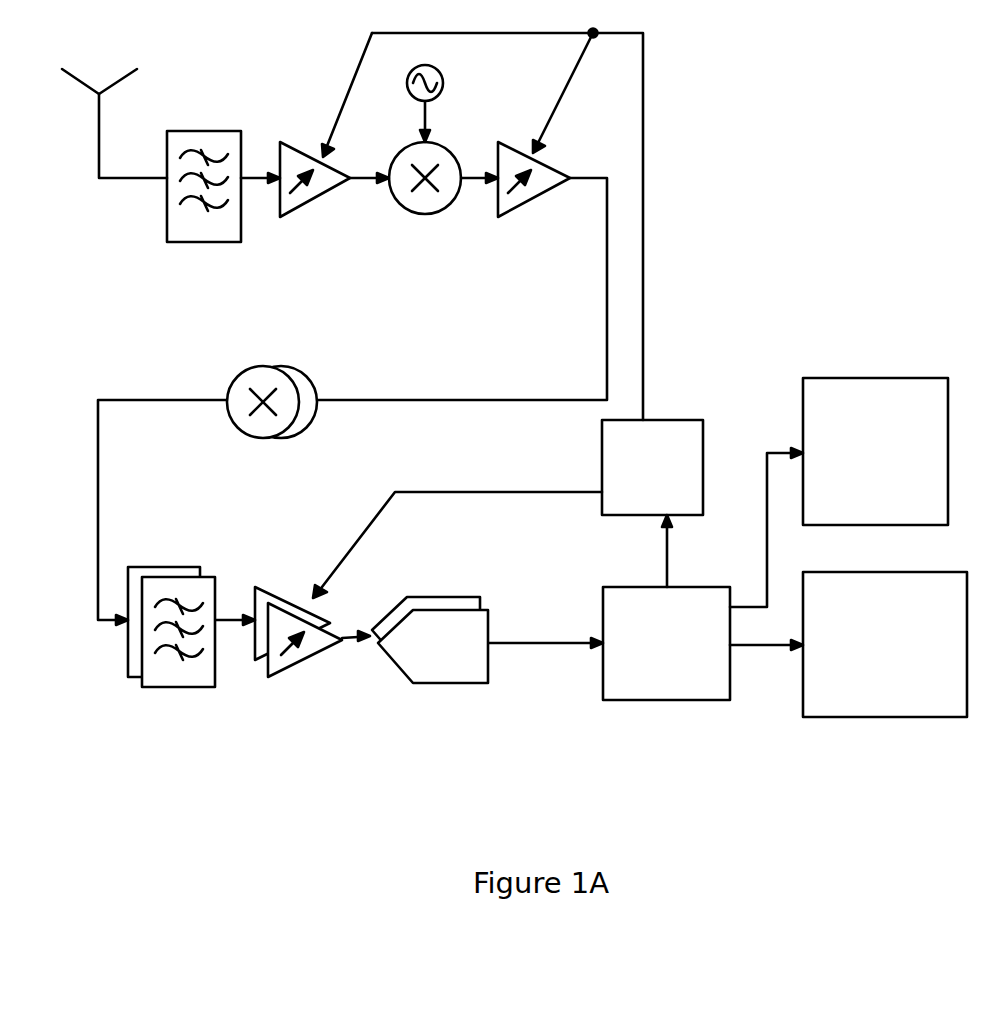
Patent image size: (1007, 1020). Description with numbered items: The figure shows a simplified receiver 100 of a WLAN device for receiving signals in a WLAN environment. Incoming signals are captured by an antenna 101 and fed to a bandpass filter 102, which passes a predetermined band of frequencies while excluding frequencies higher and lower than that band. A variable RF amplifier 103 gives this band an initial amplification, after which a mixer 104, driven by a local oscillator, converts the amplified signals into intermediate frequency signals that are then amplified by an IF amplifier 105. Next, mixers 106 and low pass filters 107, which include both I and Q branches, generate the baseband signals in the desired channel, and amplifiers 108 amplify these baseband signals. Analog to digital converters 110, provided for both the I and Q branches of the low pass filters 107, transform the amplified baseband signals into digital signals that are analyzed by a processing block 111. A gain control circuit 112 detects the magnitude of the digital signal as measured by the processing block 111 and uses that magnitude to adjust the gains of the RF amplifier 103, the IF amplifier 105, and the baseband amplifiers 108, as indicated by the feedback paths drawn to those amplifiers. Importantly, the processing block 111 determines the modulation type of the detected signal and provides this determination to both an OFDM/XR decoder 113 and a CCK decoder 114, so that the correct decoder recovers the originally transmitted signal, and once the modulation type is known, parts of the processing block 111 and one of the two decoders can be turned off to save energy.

The receiver 100 is at (737, 278).
The antenna 101 is at (114, 108).
The bandpass filter 102 is at (203, 248).
The variable RF amplifier 103 is at (318, 198).
The mixer 104 is at (428, 214).
The IF amplifier 105 is at (537, 198).
The mixers 106 is at (267, 438).
The low pass filters 107 is at (180, 567).
The amplifiers 108 is at (283, 675).
The analog to digital converters 110 is at (430, 640).
The processing block 111 is at (666, 643).
The gain control circuit 112 is at (652, 467).
The OFDM/XR decoder 113 is at (875, 451).
The CCK decoder 114 is at (885, 644).